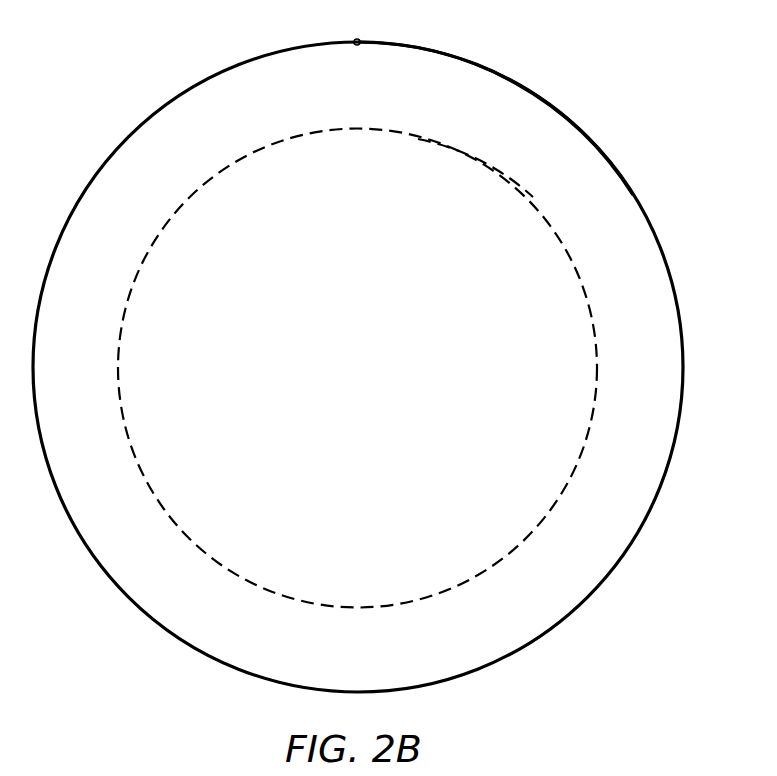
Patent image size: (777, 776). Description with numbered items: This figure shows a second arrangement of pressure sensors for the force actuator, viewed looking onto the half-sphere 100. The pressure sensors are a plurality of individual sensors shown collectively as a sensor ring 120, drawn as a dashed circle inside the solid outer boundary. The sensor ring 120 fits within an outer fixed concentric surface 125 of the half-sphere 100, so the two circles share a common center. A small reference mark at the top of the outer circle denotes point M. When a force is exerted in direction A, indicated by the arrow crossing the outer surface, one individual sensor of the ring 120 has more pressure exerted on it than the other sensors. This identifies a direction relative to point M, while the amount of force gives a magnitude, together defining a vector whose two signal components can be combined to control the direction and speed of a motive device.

The half-sphere 100 is at (598, 78).
The sensor ring 120 is at (597, 275).
The outer fixed concentric surface 125 is at (633, 195).
The point M is at (357, 28).
The direction A is at (505, 115).